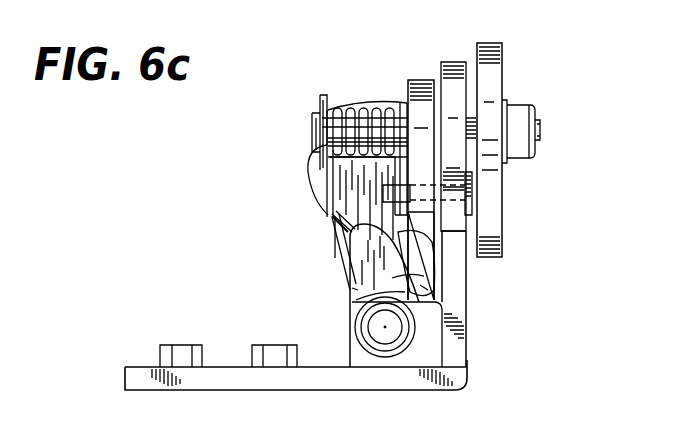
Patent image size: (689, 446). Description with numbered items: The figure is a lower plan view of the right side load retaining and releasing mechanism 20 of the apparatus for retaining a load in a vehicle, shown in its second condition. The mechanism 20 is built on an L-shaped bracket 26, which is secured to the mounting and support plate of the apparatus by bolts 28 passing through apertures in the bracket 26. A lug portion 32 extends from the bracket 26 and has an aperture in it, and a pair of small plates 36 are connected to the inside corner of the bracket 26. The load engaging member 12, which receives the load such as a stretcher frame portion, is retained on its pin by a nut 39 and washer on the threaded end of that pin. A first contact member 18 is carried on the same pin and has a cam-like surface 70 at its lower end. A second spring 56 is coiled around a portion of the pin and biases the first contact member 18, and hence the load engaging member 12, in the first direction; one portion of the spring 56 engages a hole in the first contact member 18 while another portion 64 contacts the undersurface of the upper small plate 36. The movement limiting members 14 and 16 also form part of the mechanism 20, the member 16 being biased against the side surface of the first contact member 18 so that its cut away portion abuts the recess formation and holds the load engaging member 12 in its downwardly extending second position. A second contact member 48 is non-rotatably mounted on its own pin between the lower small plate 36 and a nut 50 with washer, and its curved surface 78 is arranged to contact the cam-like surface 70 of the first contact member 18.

The load engaging member 12 is at (503, 217).
The movement limiting member 14 is at (383, 199).
The movement limiting member 16 is at (313, 176).
The first contact member 18 is at (416, 85).
The load retaining and releasing mechanism 20 is at (258, 131).
The bracket 26 is at (326, 394).
The bolt 28 is at (273, 352).
The lug portion 32 is at (455, 321).
The small plate 36 is at (436, 338).
The nut 39 is at (538, 141).
The second contact member 48 is at (357, 288).
The nut 50 is at (381, 340).
The second spring 56 is at (347, 106).
The spring portion 64 is at (335, 252).
The cam-like surface 70 is at (433, 292).
The curved surface 78 is at (356, 319).